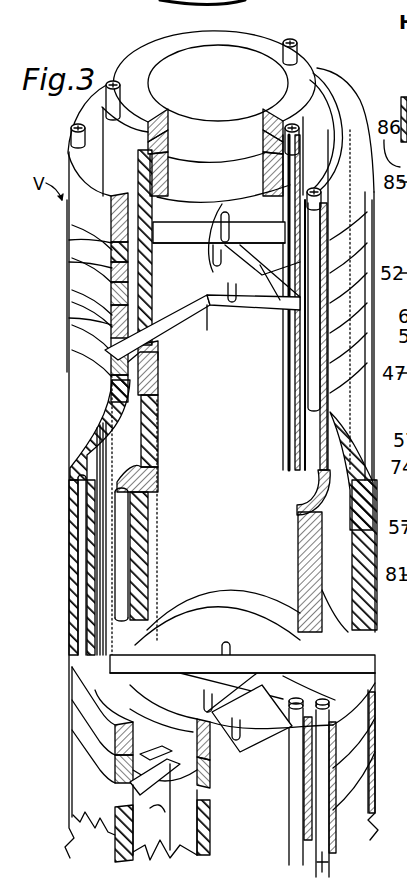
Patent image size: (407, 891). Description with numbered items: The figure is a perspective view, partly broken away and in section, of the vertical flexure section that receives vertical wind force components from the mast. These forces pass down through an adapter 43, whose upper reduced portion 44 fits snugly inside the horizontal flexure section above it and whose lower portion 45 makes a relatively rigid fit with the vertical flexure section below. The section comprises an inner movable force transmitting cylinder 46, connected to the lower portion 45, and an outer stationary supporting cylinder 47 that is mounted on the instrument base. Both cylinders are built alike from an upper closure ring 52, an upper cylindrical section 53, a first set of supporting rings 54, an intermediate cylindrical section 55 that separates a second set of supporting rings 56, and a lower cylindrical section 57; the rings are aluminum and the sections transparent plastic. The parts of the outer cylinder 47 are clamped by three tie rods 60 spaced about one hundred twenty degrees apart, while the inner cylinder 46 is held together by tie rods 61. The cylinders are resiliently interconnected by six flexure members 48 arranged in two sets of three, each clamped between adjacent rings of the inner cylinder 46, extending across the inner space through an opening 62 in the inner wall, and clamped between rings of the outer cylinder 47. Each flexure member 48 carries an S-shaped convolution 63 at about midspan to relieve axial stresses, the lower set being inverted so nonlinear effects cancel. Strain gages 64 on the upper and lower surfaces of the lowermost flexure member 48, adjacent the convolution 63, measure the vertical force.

The adapter 43 is at (152, 87).
The upper reduced portion 44 is at (150, 133).
The lower portion 45 is at (148, 183).
The inner movable force transmitting cylinder 46 is at (150, 210).
The outer stationary supporting cylinder 47 is at (70, 372).
The flexure member 48 is at (210, 305).
The upper closure ring 52 is at (112, 218).
The upper cylindrical section 53 is at (110, 252).
The first set of supporting rings 54 is at (111, 309).
The intermediate cylindrical section 55 is at (110, 404).
The second set of supporting rings 56 is at (140, 625).
The lower cylindrical section 57 is at (210, 825).
The tie rods 60 is at (312, 352).
The tie rods 61 is at (292, 392).
The opening 62 is at (300, 645).
The S-shaped convolution 63 is at (218, 210).
The strain gages 64 is at (158, 757).